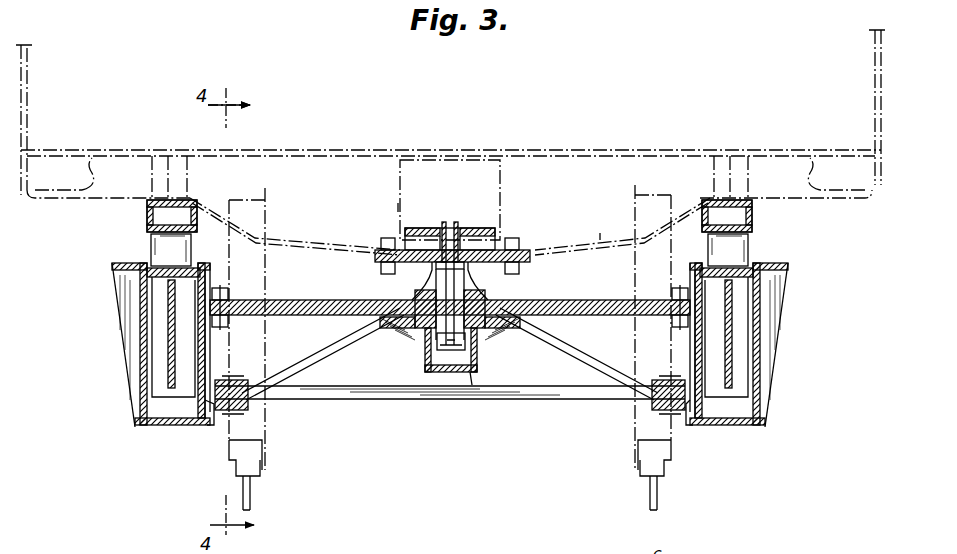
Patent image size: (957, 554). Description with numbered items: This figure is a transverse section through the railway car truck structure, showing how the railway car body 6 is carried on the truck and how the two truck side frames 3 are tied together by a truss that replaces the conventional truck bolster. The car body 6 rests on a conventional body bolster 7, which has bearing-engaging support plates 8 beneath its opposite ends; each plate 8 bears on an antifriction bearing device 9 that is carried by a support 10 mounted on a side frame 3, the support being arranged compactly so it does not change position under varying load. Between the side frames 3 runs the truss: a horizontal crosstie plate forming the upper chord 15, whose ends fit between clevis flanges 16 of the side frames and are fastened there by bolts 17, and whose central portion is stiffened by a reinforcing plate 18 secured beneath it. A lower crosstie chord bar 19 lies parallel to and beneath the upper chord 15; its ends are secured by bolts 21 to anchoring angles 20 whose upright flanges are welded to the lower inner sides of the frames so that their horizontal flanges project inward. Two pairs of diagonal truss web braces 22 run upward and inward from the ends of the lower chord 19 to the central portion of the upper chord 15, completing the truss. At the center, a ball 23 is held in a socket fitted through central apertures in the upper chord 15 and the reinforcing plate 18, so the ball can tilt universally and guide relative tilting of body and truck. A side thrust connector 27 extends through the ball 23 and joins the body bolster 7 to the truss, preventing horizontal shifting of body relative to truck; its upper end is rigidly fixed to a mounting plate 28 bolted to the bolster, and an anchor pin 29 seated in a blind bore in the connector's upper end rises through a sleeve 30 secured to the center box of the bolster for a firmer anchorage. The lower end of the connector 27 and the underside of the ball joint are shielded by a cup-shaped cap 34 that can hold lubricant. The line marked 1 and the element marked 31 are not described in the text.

The suspension rod 1 is at (270, 212).
The side frame 3 is at (135, 325).
The railway car body 6 is at (640, 150).
The body bolster 7 is at (398, 205).
The bearing-engaging support plate 8 is at (147, 219).
The antifriction bearing device 9 is at (160, 248).
The support 10 is at (172, 352).
The upper crosstie chord 15 is at (346, 300).
The clevis flange 16 is at (228, 300).
The bolt 17 is at (215, 292).
The reinforcing plate 18 is at (515, 330).
The lower crosstie chord bar 19 is at (538, 398).
The anchoring angle 20 is at (212, 428).
The bolt 21 is at (248, 405).
The diagonal truss web brace 22 is at (355, 338).
The ball 23 is at (478, 338).
The side thrust connector 27 is at (462, 296).
The mounting plate 28 is at (530, 257).
The anchor pin 29 is at (448, 228).
The sleeve 30 is at (498, 240).
The channel 31 is at (463, 226).
The cap 34 is at (470, 372).